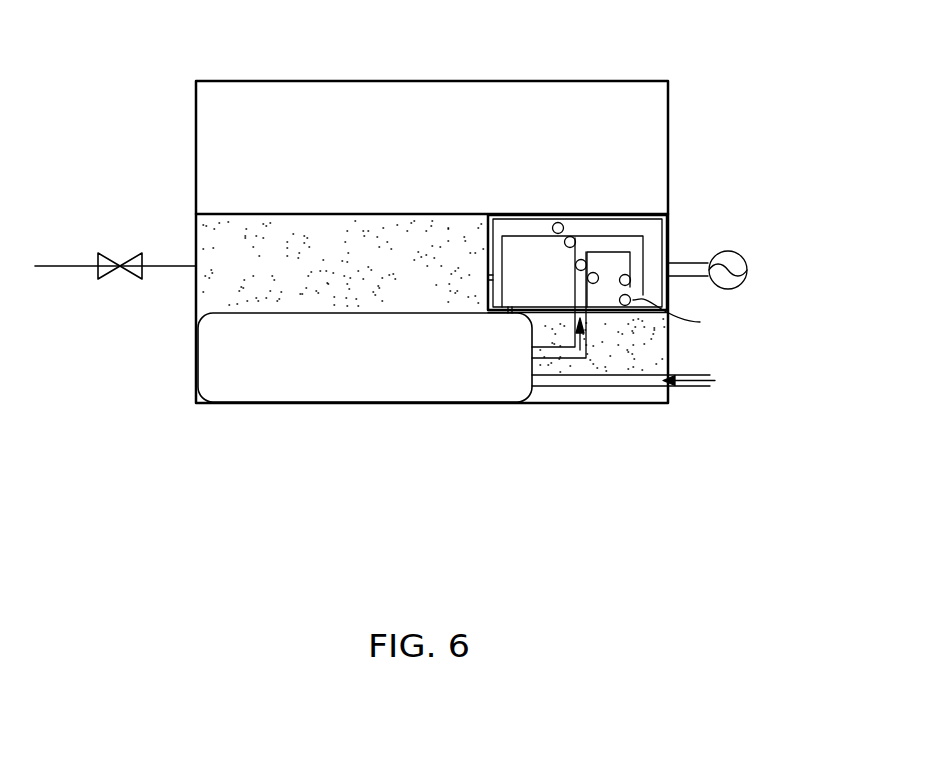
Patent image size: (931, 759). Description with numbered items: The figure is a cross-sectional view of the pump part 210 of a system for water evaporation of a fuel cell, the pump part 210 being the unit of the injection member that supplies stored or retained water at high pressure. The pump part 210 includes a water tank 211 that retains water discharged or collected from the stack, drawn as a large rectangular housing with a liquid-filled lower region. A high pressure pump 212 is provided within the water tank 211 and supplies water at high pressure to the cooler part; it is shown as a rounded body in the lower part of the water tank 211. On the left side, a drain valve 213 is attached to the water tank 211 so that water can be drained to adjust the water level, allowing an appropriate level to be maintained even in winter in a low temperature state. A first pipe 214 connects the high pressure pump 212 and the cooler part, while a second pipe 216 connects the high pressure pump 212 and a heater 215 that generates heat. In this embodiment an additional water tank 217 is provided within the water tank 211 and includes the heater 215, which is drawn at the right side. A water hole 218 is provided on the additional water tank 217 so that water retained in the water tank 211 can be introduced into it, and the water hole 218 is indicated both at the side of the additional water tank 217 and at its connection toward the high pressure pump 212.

The pump part 210 is at (152, 41).
The water tank 211 is at (668, 137).
The high pressure pump 212 is at (298, 393).
The drain valve 213 is at (108, 279).
The first pipe 214 is at (628, 380).
The heater 215 is at (653, 250).
The second pipe 216 is at (555, 350).
The additional water tank 217 is at (630, 227).
The water hole 218 is at (488, 265).